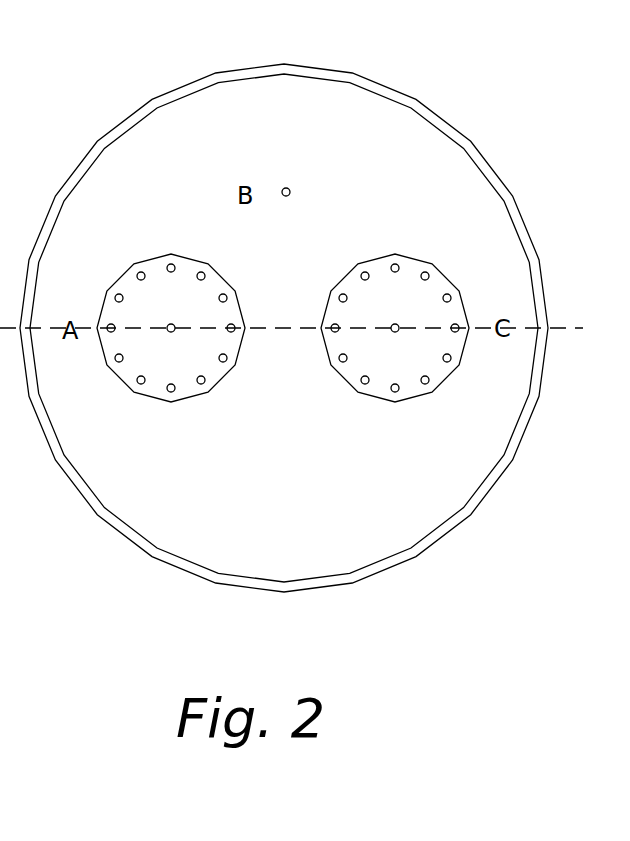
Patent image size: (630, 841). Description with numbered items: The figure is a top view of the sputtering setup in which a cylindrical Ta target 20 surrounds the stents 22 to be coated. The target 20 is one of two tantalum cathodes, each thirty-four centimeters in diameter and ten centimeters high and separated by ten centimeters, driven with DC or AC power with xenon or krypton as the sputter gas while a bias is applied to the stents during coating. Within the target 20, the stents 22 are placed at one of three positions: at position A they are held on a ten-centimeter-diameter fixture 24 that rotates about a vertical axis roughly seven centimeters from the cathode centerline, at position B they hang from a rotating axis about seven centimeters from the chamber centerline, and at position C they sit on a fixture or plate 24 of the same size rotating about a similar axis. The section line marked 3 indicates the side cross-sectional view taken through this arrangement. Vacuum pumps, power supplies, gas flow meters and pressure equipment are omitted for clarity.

The Ta target 20 is at (498, 473).
The stents 22 is at (226, 296).
The fixture 24 is at (358, 392).
The section line for FIG. 3 is at (587, 334).